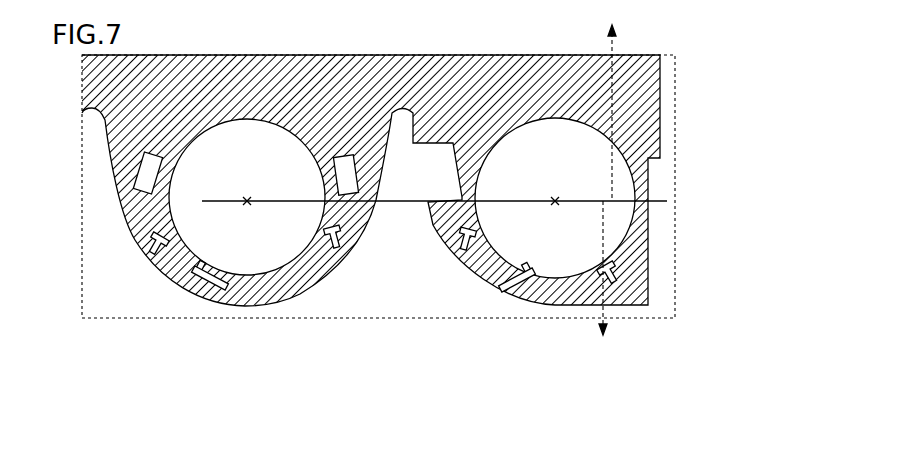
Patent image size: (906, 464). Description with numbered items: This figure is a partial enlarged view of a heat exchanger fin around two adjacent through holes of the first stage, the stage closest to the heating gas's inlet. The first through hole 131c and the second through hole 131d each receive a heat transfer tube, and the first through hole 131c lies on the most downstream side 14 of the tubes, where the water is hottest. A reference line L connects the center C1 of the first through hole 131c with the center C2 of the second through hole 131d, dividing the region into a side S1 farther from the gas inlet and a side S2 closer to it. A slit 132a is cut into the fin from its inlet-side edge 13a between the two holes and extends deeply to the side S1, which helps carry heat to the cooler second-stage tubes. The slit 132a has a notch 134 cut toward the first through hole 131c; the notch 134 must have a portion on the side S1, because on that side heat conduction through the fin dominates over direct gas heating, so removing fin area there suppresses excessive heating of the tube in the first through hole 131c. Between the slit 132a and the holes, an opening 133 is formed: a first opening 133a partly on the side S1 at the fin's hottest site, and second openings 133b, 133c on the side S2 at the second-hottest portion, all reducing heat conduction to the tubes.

The edge 13a is at (530, 300).
The most downstream side 14 is at (573, 257).
The first through hole 131c is at (587, 248).
The second through hole 131d is at (212, 238).
The slit 132a is at (402, 225).
The opening 133 is at (425, 400).
The first opening 133a is at (348, 180).
The second opening 133b is at (333, 243).
The second opening 133c is at (288, 282).
The notch 134 is at (440, 172).
The center of first through hole C1 is at (555, 201).
The center of second through hole C2 is at (247, 201).
The side farther from the heating gas's inlet side S1 is at (595, 113).
The side closer to the heating gas's inlet side S2 is at (588, 268).
The reference line L is at (622, 202).